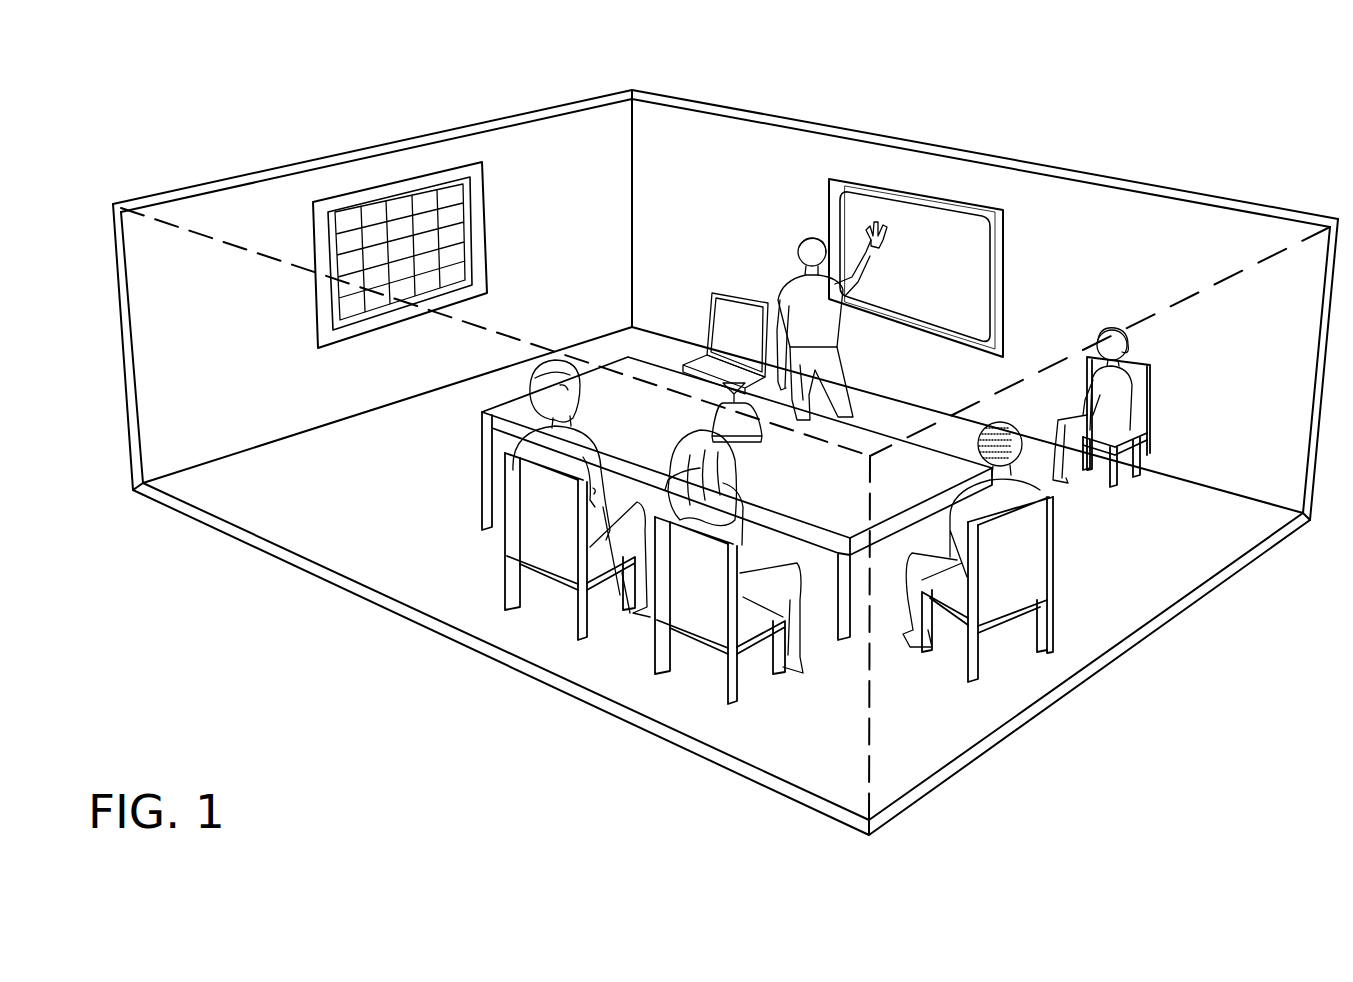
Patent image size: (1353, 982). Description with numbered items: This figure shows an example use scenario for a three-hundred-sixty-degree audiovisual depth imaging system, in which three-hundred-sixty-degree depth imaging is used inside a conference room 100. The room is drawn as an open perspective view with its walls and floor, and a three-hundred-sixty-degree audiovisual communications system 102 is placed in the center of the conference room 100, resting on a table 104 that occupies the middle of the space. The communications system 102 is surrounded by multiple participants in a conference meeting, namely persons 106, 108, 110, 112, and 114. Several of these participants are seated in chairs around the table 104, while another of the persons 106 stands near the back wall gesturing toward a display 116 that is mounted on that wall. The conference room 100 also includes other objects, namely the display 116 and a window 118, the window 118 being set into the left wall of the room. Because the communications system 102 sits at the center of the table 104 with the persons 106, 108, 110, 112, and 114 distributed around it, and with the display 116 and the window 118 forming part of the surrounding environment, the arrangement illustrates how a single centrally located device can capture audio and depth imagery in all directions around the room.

The conference room 100 is at (1165, 113).
The 360-degree audiovisual communications system 102 is at (753, 445).
The table 104 is at (880, 428).
The person 106 is at (806, 243).
The person 108 is at (1113, 330).
The person 110 is at (1012, 418).
The person 112 is at (692, 435).
The person 114 is at (548, 362).
The display 116 is at (1005, 253).
The window 118 is at (488, 207).